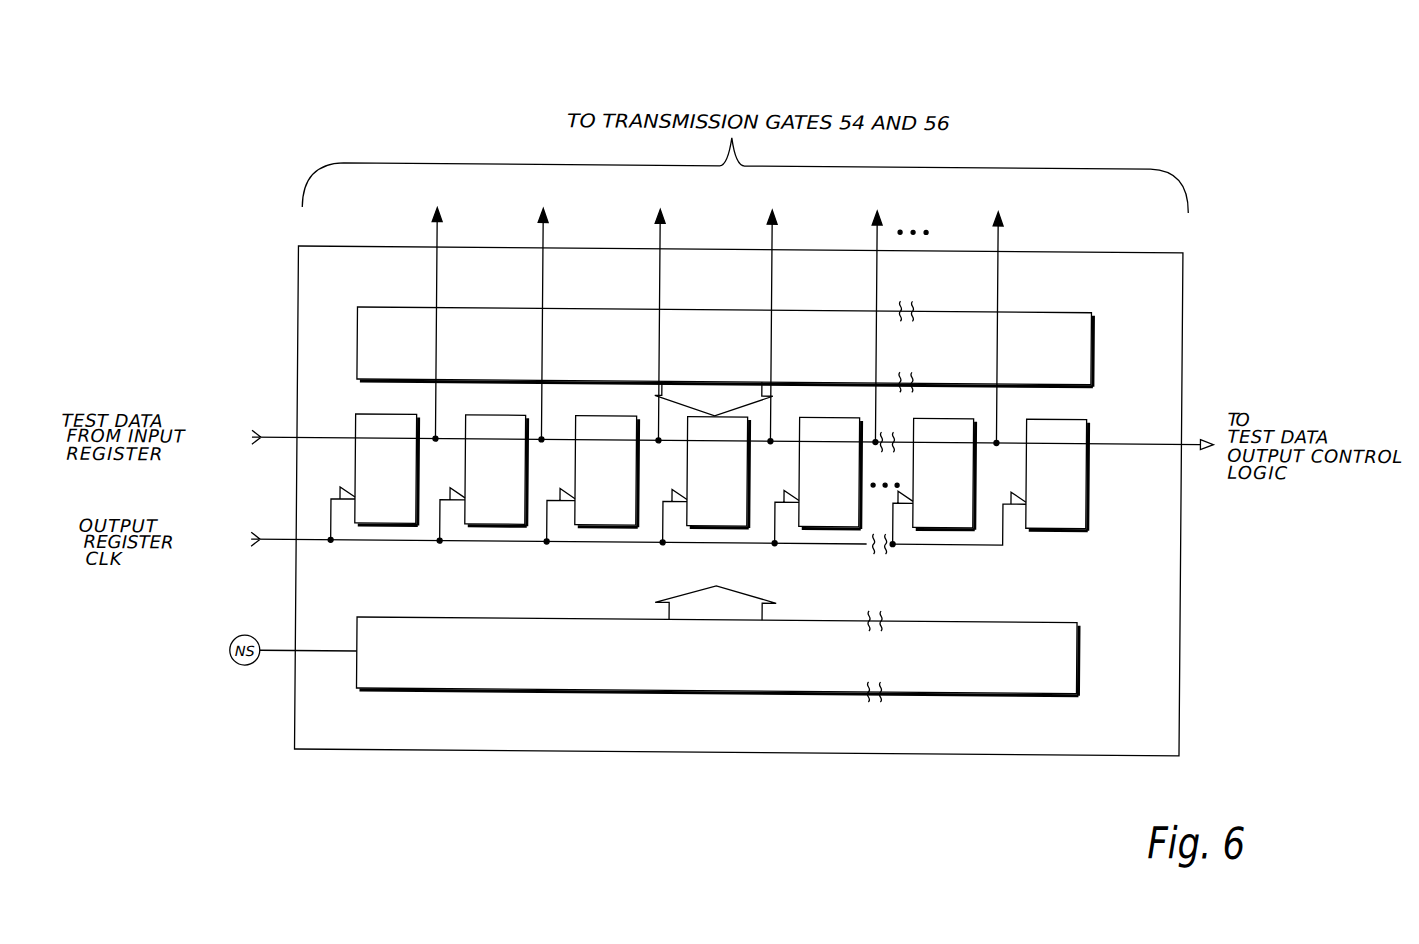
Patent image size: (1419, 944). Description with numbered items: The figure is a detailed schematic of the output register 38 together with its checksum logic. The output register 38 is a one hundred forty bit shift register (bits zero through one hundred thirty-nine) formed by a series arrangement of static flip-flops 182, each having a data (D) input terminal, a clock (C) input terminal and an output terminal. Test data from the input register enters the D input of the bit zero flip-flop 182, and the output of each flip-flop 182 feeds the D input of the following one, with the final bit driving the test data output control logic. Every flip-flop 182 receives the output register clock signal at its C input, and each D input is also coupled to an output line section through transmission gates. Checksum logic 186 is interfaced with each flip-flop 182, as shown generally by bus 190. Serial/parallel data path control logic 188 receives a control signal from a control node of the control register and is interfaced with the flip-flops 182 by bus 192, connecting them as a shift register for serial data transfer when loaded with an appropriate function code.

The output register 38 is at (705, 752).
The static flip-flop 182 is at (1069, 481).
The checksum logic 186 is at (619, 355).
The serial/parallel data path control logic 188 is at (929, 670).
The bus 190 is at (724, 401).
The bus 192 is at (733, 611).